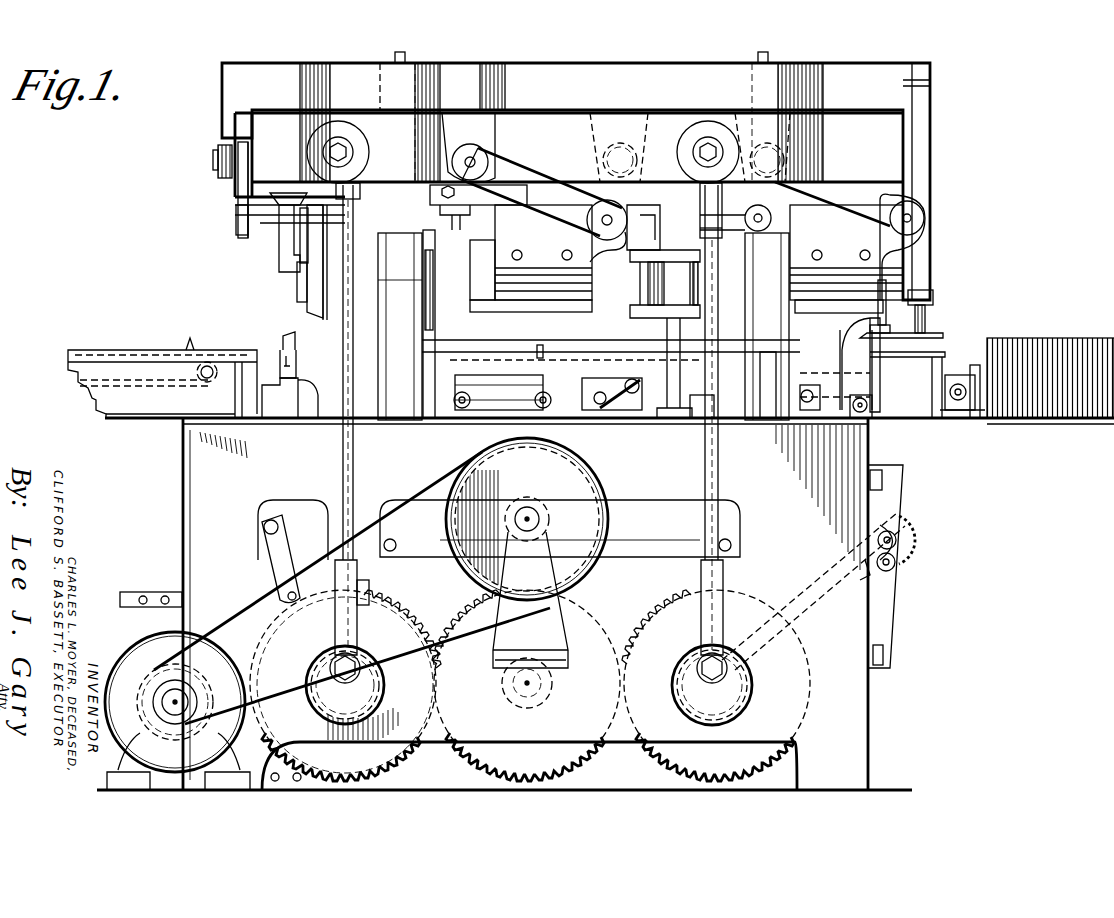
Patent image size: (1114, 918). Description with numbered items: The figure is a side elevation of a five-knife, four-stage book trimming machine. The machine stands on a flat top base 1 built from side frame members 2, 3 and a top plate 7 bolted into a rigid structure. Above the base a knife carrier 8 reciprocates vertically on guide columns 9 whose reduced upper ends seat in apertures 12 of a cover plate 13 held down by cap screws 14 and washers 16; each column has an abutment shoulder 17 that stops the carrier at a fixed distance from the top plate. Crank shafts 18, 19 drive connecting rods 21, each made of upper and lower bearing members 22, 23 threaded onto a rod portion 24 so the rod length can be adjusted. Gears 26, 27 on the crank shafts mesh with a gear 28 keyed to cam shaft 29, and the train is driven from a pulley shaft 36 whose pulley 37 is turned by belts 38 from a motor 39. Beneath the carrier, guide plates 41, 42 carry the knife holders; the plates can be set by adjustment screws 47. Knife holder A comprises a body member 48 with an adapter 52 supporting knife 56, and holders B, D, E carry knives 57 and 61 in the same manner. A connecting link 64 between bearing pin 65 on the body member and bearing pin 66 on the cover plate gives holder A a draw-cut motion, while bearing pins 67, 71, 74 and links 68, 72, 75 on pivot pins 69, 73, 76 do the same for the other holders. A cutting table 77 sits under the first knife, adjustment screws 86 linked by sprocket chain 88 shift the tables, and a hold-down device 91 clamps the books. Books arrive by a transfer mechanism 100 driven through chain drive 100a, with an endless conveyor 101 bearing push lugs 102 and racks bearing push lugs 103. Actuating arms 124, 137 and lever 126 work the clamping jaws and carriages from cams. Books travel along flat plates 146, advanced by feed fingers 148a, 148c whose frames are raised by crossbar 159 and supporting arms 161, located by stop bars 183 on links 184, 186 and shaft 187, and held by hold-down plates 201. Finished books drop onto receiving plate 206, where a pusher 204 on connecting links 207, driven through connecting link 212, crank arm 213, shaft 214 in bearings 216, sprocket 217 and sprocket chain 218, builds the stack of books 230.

The flat top base 1 is at (172, 452).
The side frame member 2 is at (190, 471).
The side frame member 3 is at (688, 748).
The top plate 7 is at (182, 420).
The knife carrier 8 is at (906, 151).
The guide column 9 is at (432, 418).
The aperture 12 is at (390, 68).
The cover plate 13 is at (287, 59).
The cap screw 14 is at (400, 52).
The washer 16 is at (418, 62).
The abutment shoulder 17 is at (380, 245).
The crank shaft 18 is at (386, 698).
The crank shaft 19 is at (735, 705).
The connecting rod 21 is at (334, 450).
The upper bearing member 22 is at (325, 148).
The lower bearing member 23 is at (330, 660).
The rod portion 24 is at (342, 466).
The gear 26 is at (398, 765).
The gear 27 is at (748, 766).
The gear 28 is at (552, 765).
The cam shaft 29 is at (548, 698).
The pulley shaft 36 is at (525, 518).
The pulley 37 is at (575, 482).
The belt 38 is at (238, 628).
The motor 39 is at (160, 640).
The knife holder guide plate 41 is at (270, 188).
The knife holder guide plate 42 is at (478, 208).
The adjustment screw 47 is at (480, 205).
The body member 48 is at (298, 256).
The adapter 52 is at (297, 275).
The knife 56 is at (306, 292).
The knife 57 is at (580, 300).
The knife 61 is at (850, 305).
The connecting link 64 is at (238, 194).
The bearing pin 65 is at (236, 218).
The bearing pin 66 is at (212, 160).
The bearing pin 67 is at (600, 226).
The connecting link 68 is at (510, 168).
The pivot pin 69 is at (478, 146).
The bearing pin 71 is at (770, 214).
The connecting link 72 is at (645, 160).
The pivot pin 73 is at (603, 160).
The bearing pin 74 is at (926, 215).
The connecting link 75 is at (836, 190).
The pivot pin 76 is at (772, 158).
The cutting table 77 is at (301, 397).
The adjustment screw 86 is at (464, 408).
The sprocket chain 88 is at (499, 382).
The hold-down device 91 is at (320, 310).
The book transfer mechanism 100 is at (80, 342).
The chain drive 100a is at (150, 590).
The endless conveyor 101 is at (115, 352).
The push lug 102 is at (188, 348).
The push lug 103 is at (290, 342).
The actuating arm 124 is at (282, 552).
The lever 126 is at (284, 522).
The actuating arm 137 is at (370, 600).
The flat plate 146 is at (945, 350).
The feed finger 148a is at (538, 350).
The feed finger 148c is at (836, 370).
The crossbar 159 is at (662, 545).
The supporting arm 161 is at (395, 525).
The stop bar 183 is at (712, 418).
The connecting link 184 is at (620, 410).
The connecting link 186 is at (872, 410).
The shaft 187 is at (604, 392).
The hold-down plate 201 is at (935, 330).
The pusher 204 is at (970, 412).
The receiving plate 206 is at (1060, 420).
The connecting link 207 is at (952, 412).
The connecting link 212 is at (885, 604).
The crank arm 213 is at (898, 528).
The shaft 214 is at (905, 558).
The bearing 216 is at (895, 617).
The sprocket 217 is at (905, 545).
The sprocket chain 218 is at (790, 598).
The stack of books 230 is at (1080, 330).
The first stage knife holder A is at (270, 247).
The knife holder B is at (531, 252).
The knife holder D is at (630, 236).
The knife holder E is at (846, 252).